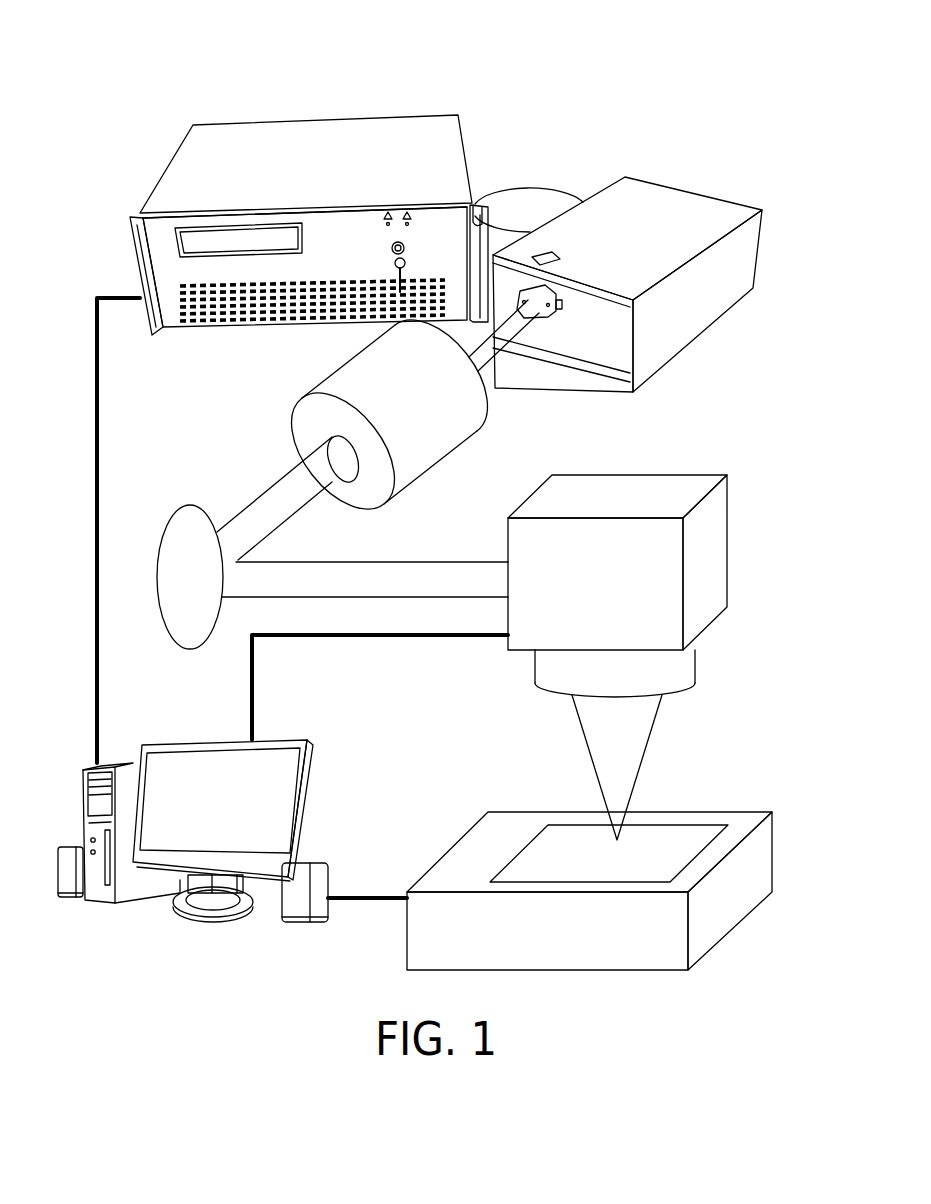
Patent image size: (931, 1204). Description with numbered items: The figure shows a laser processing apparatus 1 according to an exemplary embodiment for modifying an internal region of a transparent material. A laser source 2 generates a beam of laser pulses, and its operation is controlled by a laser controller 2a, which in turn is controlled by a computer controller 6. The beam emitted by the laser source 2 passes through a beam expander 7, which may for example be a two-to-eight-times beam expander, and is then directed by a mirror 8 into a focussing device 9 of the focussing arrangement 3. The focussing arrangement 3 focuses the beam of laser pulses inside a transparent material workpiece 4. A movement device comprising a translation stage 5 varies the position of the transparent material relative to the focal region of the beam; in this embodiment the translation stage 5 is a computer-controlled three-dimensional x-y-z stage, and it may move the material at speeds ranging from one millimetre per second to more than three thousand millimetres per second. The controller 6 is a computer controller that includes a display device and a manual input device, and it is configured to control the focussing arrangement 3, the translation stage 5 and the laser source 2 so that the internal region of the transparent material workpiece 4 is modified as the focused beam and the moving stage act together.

The laser processing apparatus 1 is at (196, 76).
The laser source 2 is at (697, 322).
The laser controller 2a is at (462, 128).
The focussing arrangement 3 is at (519, 657).
The transparent material workpiece 4 is at (690, 827).
The translation stage 5 is at (735, 915).
The controller 6 is at (308, 818).
The beam expander 7 is at (427, 462).
The mirror 8 is at (165, 632).
The focussing device 9 is at (727, 573).